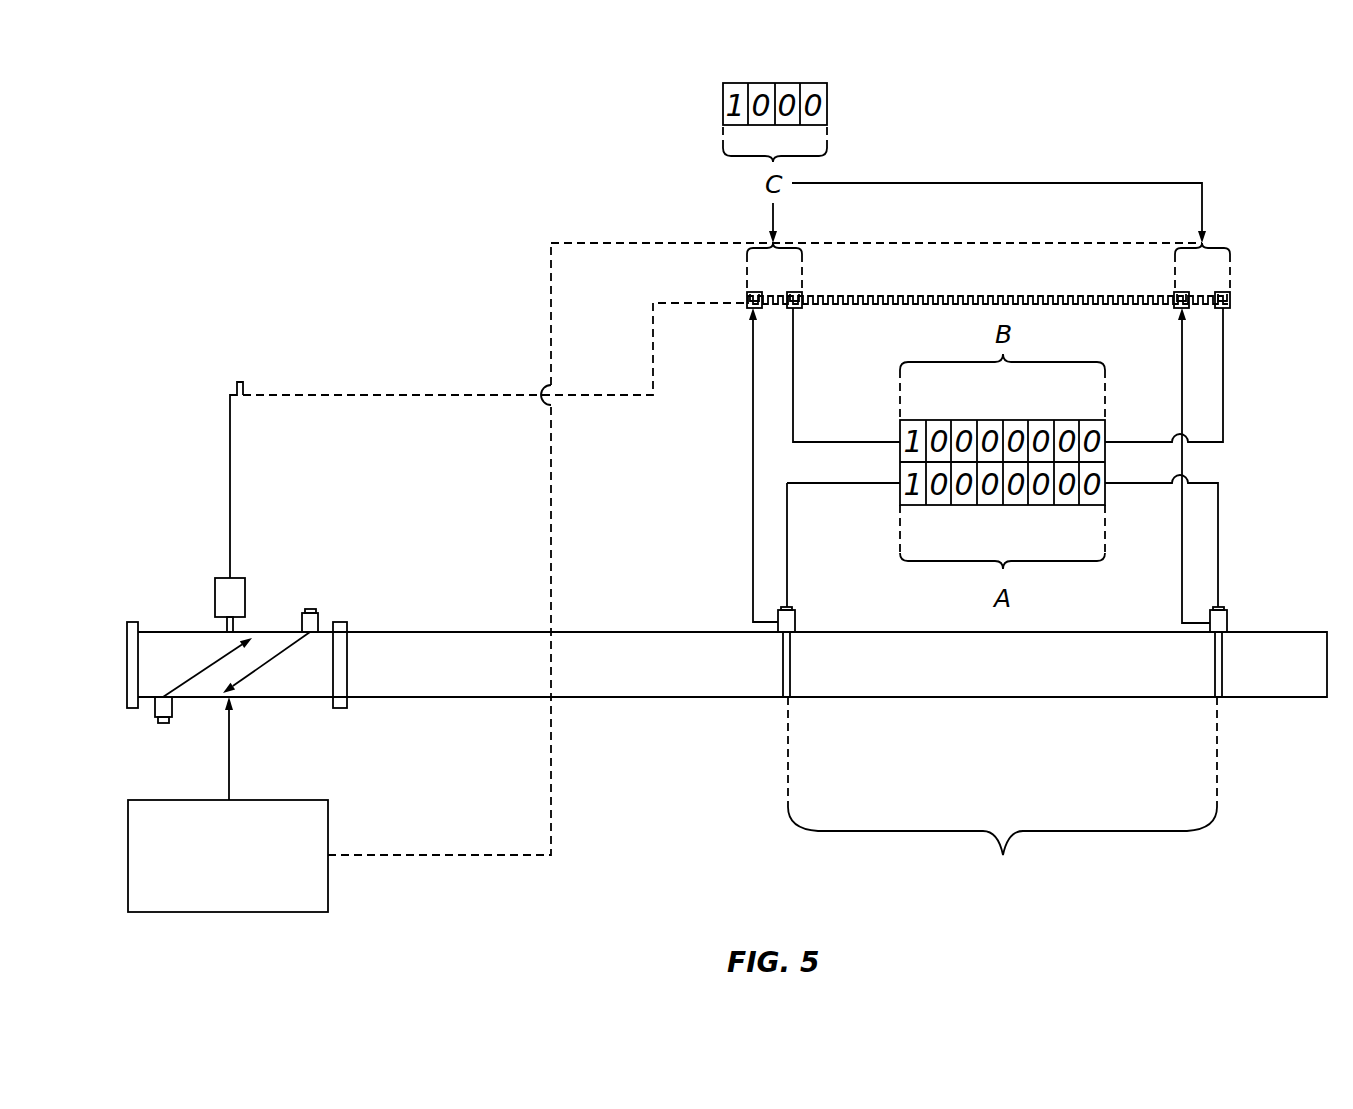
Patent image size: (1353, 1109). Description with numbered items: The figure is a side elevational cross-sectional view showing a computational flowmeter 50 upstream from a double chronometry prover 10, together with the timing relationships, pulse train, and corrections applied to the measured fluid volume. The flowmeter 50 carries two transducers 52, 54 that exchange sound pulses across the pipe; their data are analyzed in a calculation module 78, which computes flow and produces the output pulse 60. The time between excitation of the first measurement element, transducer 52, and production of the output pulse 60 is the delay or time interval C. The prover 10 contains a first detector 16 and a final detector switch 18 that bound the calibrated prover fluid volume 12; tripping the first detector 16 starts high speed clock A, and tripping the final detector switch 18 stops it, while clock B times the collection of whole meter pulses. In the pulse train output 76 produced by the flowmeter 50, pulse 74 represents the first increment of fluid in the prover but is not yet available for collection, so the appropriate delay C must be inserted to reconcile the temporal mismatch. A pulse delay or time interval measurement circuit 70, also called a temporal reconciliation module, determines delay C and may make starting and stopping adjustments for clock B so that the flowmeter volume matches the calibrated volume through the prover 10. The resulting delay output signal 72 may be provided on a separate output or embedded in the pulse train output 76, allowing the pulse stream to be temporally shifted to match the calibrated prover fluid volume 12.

The prover 10 is at (1132, 718).
The calibrated prover fluid volume 12 is at (1002, 795).
The first detector 16 is at (797, 622).
The final detector switch 18 is at (1230, 622).
The flowmeter 50 is at (137, 595).
The transducer 52 is at (155, 707).
The transducer 54 is at (320, 623).
The output pulse 60 is at (239, 382).
The pulse delay or time interval measurement circuit 70 is at (158, 800).
The delay output signal 72 is at (551, 818).
The pulse 74 is at (747, 308).
The pulse train output 76 is at (980, 297).
The calculation module 78 is at (215, 597).